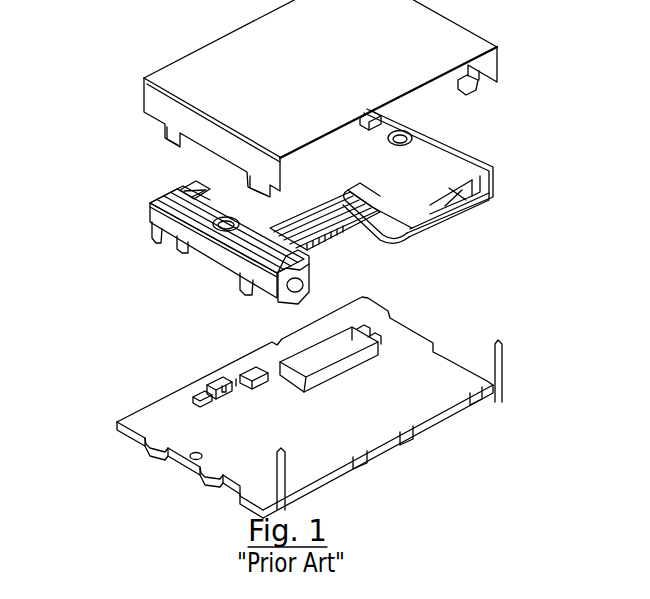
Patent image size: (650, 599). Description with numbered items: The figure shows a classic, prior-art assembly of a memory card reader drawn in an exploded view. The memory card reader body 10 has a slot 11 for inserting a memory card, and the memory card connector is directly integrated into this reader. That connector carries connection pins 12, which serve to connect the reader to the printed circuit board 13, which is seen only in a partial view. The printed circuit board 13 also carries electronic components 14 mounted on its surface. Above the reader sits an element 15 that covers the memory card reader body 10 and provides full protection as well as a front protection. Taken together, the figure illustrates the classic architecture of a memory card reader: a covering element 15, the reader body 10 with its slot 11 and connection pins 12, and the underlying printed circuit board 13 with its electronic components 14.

The memory card reader body 10 is at (150, 213).
The slot 11 is at (480, 202).
The connection pins 12 is at (343, 237).
The printed circuit board 13 is at (440, 405).
The electronic components 14 is at (207, 375).
The element 15 is at (143, 110).